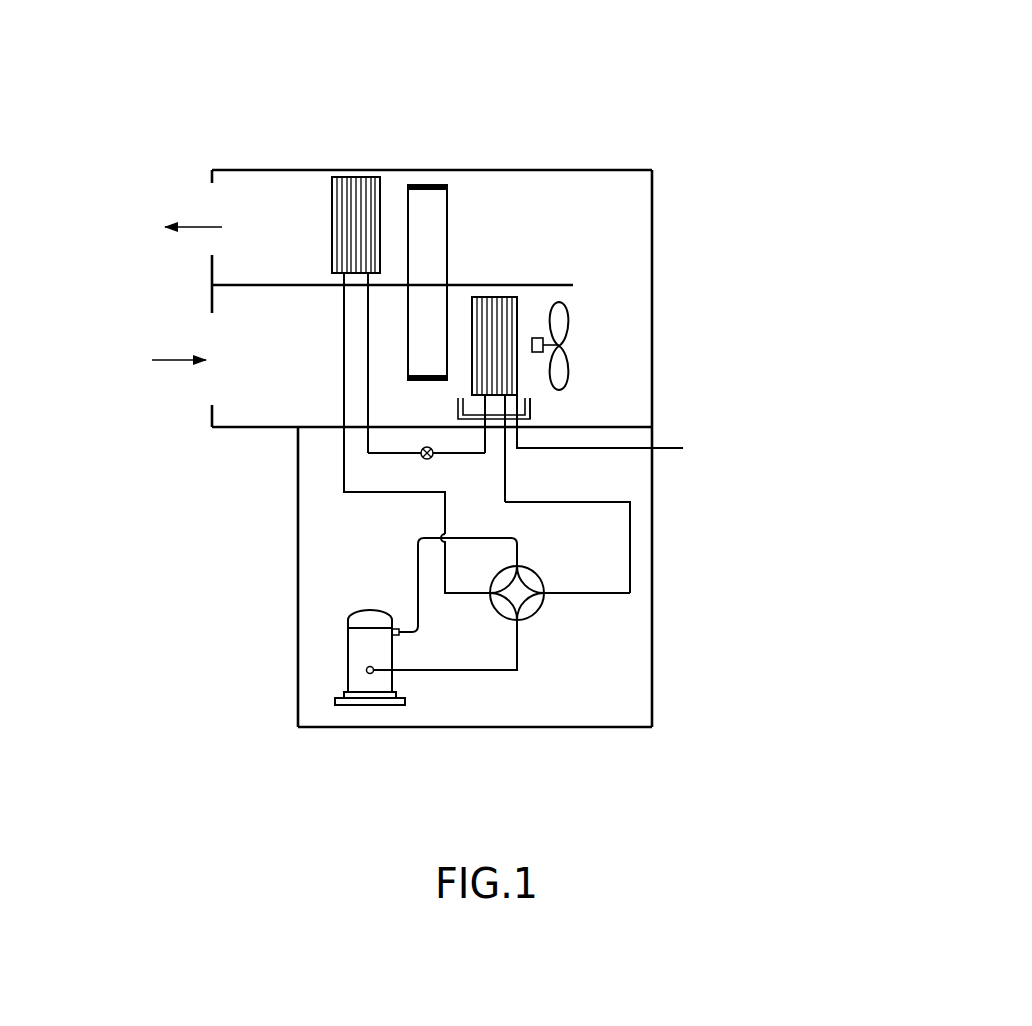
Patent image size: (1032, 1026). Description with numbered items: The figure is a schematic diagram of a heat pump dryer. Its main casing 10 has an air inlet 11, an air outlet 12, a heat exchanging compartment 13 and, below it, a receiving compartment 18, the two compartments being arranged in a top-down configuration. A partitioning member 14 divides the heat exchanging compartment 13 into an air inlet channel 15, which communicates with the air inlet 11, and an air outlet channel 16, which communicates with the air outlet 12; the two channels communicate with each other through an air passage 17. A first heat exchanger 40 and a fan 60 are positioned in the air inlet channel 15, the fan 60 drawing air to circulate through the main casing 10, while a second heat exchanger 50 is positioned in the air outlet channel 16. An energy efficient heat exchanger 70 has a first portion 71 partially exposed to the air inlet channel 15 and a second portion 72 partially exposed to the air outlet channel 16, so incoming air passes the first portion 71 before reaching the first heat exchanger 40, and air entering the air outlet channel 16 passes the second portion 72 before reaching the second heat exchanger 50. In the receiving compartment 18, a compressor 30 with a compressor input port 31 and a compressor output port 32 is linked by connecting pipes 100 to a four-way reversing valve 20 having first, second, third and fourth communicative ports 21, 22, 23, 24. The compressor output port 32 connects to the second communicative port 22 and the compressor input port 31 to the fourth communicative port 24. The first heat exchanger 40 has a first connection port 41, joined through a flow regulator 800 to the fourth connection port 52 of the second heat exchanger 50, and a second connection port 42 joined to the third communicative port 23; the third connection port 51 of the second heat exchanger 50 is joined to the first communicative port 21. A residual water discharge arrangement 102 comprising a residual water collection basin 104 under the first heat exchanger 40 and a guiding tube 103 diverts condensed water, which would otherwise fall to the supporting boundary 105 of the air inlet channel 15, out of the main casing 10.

The main casing 10 is at (653, 350).
The air inlet 11 is at (230, 365).
The air outlet 12 is at (225, 209).
The heat exchanging compartment 13 is at (600, 220).
The partitioning member 14 is at (275, 283).
The air inlet channel 15 is at (283, 393).
The air outlet channel 16 is at (297, 208).
The air passage 17 is at (617, 266).
The receiving compartment 18 is at (547, 693).
The four-way reversing valve 20 is at (543, 583).
The first communicative port 21 is at (486, 598).
The second communicative port 22 is at (523, 562).
The third communicative port 23 is at (548, 598).
The fourth communicative port 24 is at (520, 622).
The compressor 30 is at (370, 647).
The compressor input port 31 is at (370, 683).
The compressor output port 32 is at (397, 620).
The first heat exchanger 40 is at (497, 293).
The first connection port 41 is at (480, 395).
The second connection port 42 is at (505, 395).
The second heat exchanger 50 is at (363, 188).
The third connection port 51 is at (336, 281).
The fourth connection port 52 is at (358, 279).
The fan 60 is at (570, 322).
The energy efficient heat exchanger 70 is at (428, 208).
The first portion 71 is at (427, 322).
The second portion 72 is at (427, 233).
The connecting pipes 100 is at (555, 502).
The residual water discharge arrangement 102 is at (538, 395).
The guiding tube 103 is at (597, 447).
The residual water collection basin 104 is at (530, 405).
The supporting boundary 105 is at (613, 425).
The flow regulator 800 is at (424, 459).